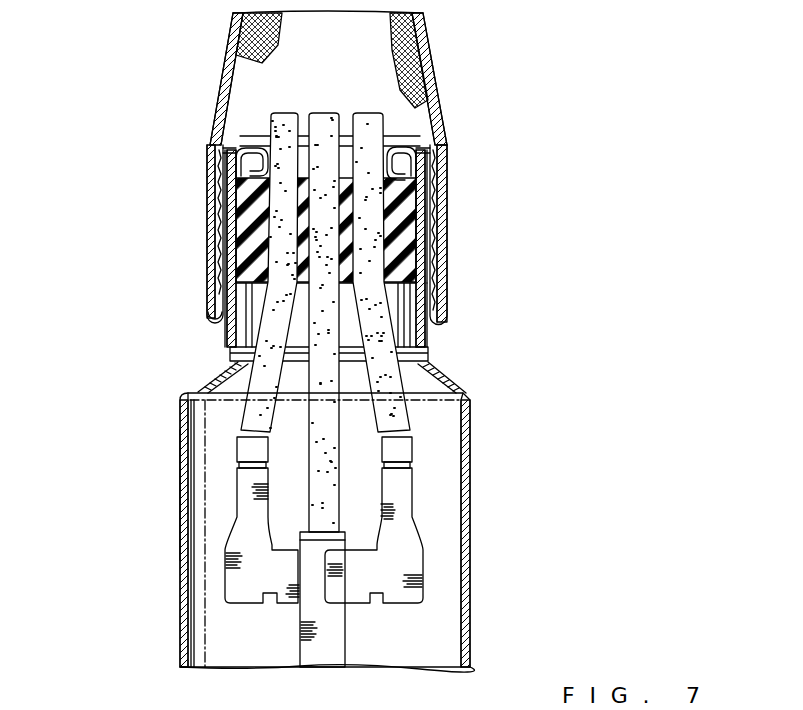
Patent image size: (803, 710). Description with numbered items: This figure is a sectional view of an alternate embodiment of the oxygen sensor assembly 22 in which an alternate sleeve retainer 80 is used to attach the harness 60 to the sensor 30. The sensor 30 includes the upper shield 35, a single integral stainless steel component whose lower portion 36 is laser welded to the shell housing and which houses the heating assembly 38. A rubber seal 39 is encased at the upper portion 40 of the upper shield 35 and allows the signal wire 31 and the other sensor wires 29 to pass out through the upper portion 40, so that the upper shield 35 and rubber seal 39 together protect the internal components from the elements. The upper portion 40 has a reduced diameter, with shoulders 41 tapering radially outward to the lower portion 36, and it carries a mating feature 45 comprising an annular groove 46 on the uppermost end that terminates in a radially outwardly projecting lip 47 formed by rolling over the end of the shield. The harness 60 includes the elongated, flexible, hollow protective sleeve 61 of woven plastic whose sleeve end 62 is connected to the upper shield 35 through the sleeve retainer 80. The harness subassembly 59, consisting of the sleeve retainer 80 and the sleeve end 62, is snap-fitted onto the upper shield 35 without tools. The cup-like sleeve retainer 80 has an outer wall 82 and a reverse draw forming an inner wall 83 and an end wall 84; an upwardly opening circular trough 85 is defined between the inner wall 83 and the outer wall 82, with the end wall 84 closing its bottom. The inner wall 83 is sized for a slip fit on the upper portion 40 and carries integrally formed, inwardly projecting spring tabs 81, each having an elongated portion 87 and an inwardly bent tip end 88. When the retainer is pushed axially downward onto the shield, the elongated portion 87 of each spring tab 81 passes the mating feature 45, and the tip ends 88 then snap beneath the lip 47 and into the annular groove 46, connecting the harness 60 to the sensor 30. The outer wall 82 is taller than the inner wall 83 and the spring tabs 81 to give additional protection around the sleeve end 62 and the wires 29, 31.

The sensor assembly 22 is at (87, 180).
The sensor wires 29 is at (284, 118).
The sensor 30 is at (472, 404).
The signal wire 31 is at (325, 118).
The upper shield 35 is at (472, 512).
The lower portion 36 is at (468, 562).
The heating assembly 38 is at (335, 670).
The rubber seal 39 is at (413, 222).
The upper portion 40 is at (232, 352).
The shoulders 41 is at (218, 375).
The mating feature 45 is at (408, 141).
The annular groove 46 is at (240, 162).
The outwardly projecting lip 47 is at (238, 148).
The harness subassembly 59 is at (238, 28).
The harness 60 is at (422, 17).
The protective sleeve 61 is at (427, 45).
The sleeve end 62 is at (438, 284).
The sleeve retainer 80 is at (450, 167).
The spring tabs 81 is at (430, 200).
The outer wall 82 is at (215, 226).
The inner wall 83 is at (217, 259).
The end wall 84 is at (209, 324).
The circular trough 85 is at (215, 147).
The elongated portion 87 is at (430, 250).
The inwardly bent tip end 88 is at (417, 157).